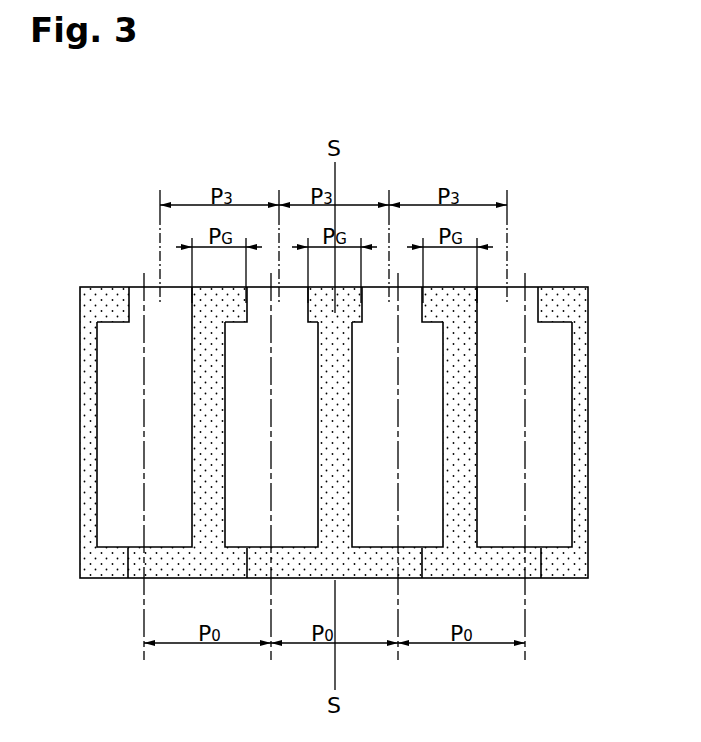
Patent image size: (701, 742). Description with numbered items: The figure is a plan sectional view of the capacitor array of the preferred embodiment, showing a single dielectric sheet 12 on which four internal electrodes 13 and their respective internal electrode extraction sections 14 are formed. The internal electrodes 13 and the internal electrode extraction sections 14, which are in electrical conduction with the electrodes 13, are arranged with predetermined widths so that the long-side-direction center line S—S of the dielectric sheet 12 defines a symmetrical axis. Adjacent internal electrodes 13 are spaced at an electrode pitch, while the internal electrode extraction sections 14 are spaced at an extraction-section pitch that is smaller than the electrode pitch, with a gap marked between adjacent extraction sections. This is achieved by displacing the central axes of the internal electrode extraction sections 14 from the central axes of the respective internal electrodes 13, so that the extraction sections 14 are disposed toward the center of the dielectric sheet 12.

The dielectric sheet 12 is at (577, 451).
The internal electrode 13 is at (155, 505).
The internal electrode extraction section 14 is at (137, 300).